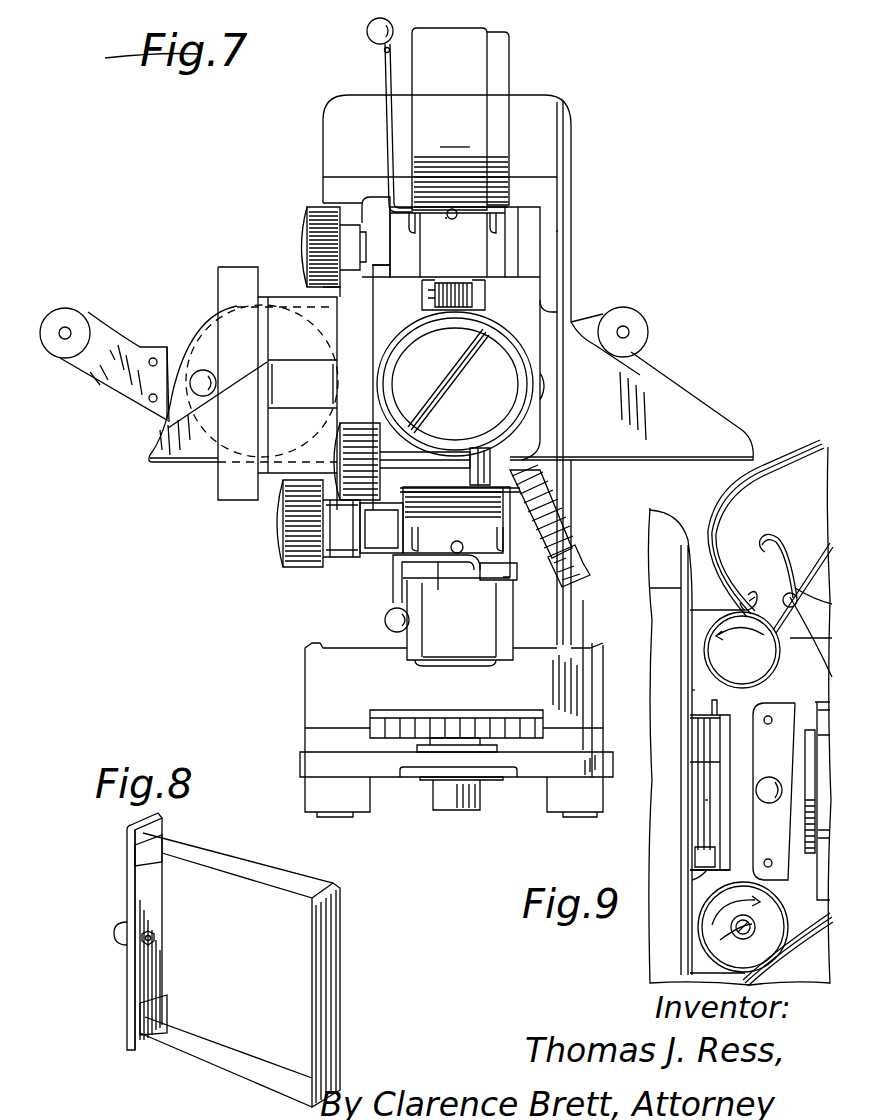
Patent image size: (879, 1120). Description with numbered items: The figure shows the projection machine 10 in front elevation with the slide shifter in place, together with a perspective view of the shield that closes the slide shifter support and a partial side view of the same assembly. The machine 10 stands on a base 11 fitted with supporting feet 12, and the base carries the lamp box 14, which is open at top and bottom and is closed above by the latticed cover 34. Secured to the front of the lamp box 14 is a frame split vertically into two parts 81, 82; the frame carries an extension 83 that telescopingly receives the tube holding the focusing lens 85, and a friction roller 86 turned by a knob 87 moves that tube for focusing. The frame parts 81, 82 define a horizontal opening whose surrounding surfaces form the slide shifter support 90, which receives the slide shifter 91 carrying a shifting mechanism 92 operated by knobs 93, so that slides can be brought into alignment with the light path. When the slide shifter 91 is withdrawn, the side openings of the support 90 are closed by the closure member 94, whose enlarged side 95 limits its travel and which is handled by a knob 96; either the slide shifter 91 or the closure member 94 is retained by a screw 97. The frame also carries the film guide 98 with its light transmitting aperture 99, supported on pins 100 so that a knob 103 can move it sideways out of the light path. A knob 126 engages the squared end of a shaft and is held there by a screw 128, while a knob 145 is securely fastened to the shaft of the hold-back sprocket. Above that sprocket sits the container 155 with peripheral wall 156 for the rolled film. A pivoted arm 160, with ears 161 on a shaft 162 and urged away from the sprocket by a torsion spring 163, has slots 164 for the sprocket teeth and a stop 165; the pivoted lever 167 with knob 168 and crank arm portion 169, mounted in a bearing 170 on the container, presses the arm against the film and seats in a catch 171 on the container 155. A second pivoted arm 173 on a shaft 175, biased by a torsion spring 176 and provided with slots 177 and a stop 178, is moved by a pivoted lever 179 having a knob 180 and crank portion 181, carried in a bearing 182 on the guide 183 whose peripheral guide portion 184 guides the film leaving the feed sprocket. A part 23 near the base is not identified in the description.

In FIG. 7, the projection machine 10 is at (585, 206).
In FIG. 7, the base 11 is at (305, 690).
In FIG. 7, the supporting feet 12 is at (360, 808).
In FIG. 7, the lamp box 14 is at (560, 228).
In FIG. 7, the rack 23 is at (490, 718).
In FIG. 7, the latticed cover 34 is at (548, 113).
In FIG. 7, the frame part 81 is at (368, 205).
In FIG. 9, the frame part 81 is at (692, 688).
In FIG. 7, the frame part 82 is at (528, 268).
In FIG. 9, the extension 83 is at (805, 710).
In FIG. 7, the focusing lens 85 is at (505, 368).
In FIG. 7, the friction roller 86 is at (440, 461).
In FIG. 7, the knob 87 is at (333, 447).
In FIG. 9, the slide shifter support 90 is at (700, 880).
In FIG. 7, the slide shifter 91 is at (650, 385).
In FIG. 9, the slide shifter 91 is at (700, 800).
In FIG. 7, the shifting mechanism 92 is at (200, 318).
In FIG. 7, the knobs 93 is at (68, 320).
In FIG. 9, the knobs 93 is at (690, 735).
In FIG. 8, the closure member 94 is at (325, 960).
In FIG. 8, the enlarged side 95 is at (127, 890).
In FIG. 8, the knob 96 is at (112, 935).
In FIG. 7, the screw 97 is at (588, 560).
In FIG. 9, the film guide 98 is at (753, 730).
In FIG. 7, the light transmitting aperture 99 is at (300, 365).
In FIG. 9, the pins 100 is at (770, 716).
In FIG. 7, the knob 103 is at (205, 371).
In FIG. 9, the knob 103 is at (770, 776).
In FIG. 7, the knob 126 is at (280, 538).
In FIG. 9, the knob 126 is at (700, 927).
In FIG. 9, the screw 128 is at (720, 940).
In FIG. 7, the knob 145 is at (300, 230).
In FIG. 9, the knob 145 is at (704, 648).
In FIG. 7, the container 155 is at (510, 66).
In FIG. 9, the container 155 is at (795, 462).
In FIG. 7, the peripheral wall 156 is at (470, 52).
In FIG. 9, the peripheral wall 156 is at (782, 555).
In FIG. 7, the pivoted arm 160 is at (427, 253).
In FIG. 9, the pivoted arm 160 is at (812, 660).
In FIG. 7, the ears 161 is at (422, 288).
In FIG. 7, the shaft 162 is at (430, 298).
In FIG. 7, the torsion spring 163 is at (462, 268).
In FIG. 7, the slots 164 is at (412, 230).
In FIG. 7, the stop 165 is at (456, 217).
In FIG. 7, the pivoted lever 167 is at (384, 78).
In FIG. 9, the pivoted lever 167 is at (810, 540).
In FIG. 7, the knob 168 is at (367, 31).
In FIG. 7, the crank arm portion 169 is at (438, 226).
In FIG. 9, the bearing 170 is at (800, 602).
In FIG. 7, the catch 171 is at (384, 52).
In FIG. 7, the second pivoted arm 173 is at (410, 513).
In FIG. 9, the second pivoted arm 173 is at (800, 950).
In FIG. 7, the shaft 175 is at (484, 456).
In FIG. 7, the torsion spring 176 is at (472, 456).
In FIG. 7, the slots 177 is at (470, 530).
In FIG. 7, the stop 178 is at (451, 547).
In FIG. 7, the pivoted lever 179 is at (393, 593).
In FIG. 7, the knob 180 is at (385, 620).
In FIG. 7, the crank portion 181 is at (438, 571).
In FIG. 7, the bearing 182 is at (500, 580).
In FIG. 7, the guide 183 is at (513, 620).
In FIG. 7, the peripheral guide portion 184 is at (455, 660).